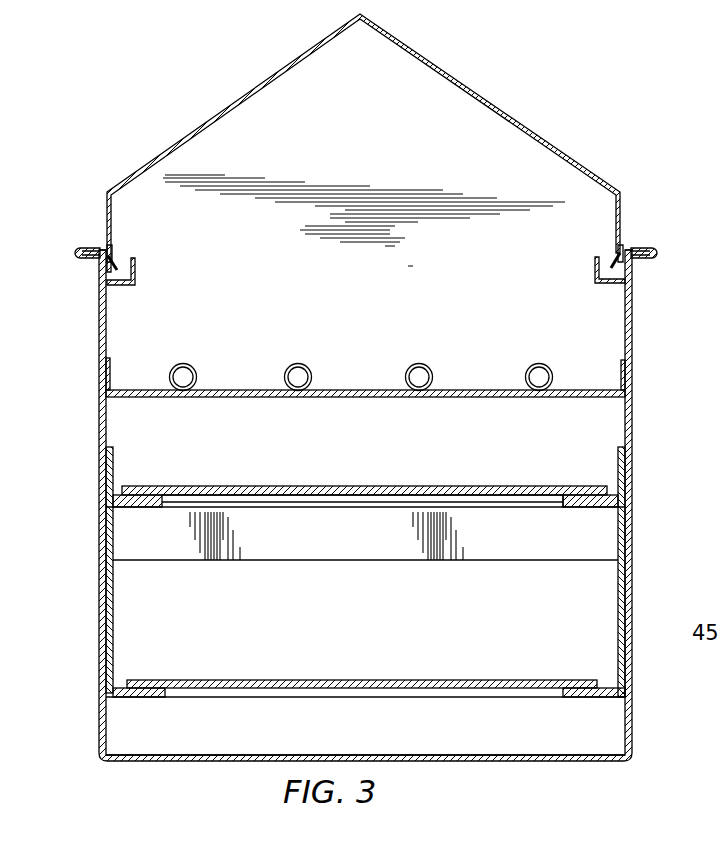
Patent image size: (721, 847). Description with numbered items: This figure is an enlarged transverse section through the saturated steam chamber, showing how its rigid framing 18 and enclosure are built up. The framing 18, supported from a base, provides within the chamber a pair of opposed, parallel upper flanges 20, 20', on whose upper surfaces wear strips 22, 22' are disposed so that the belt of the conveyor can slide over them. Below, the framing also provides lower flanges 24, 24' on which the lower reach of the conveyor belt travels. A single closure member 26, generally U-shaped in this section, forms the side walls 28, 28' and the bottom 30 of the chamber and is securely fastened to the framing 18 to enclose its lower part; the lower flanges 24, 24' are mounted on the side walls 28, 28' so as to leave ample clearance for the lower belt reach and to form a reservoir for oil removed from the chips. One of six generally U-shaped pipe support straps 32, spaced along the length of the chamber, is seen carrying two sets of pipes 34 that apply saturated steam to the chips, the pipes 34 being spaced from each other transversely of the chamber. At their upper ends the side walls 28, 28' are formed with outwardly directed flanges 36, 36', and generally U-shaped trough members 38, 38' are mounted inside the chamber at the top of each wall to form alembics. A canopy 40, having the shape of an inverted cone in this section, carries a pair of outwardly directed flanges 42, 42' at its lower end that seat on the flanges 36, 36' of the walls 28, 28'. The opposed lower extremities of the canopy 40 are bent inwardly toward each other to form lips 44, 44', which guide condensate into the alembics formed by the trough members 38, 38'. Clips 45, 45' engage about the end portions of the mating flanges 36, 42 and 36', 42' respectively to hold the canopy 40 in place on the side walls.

The rigid framing 18 is at (617, 650).
The upper flange 20 is at (365, 521).
The upper flange 20' is at (544, 521).
The wear strip 22 is at (364, 474).
The wear strip 22' is at (568, 480).
The lower flange 24 is at (365, 711).
The lower flange 24' is at (594, 714).
The closure member 26 is at (643, 337).
The side wall 28 is at (128, 552).
The side wall 28' is at (655, 547).
The bottom 30 is at (463, 762).
The pipe support strap 32 is at (392, 390).
The pipes 34 is at (287, 366).
The outwardly directed flange 36 is at (72, 279).
The outwardly directed flange 36' is at (659, 272).
The trough member 38 is at (148, 264).
The trough member 38' is at (582, 270).
The canopy 40 is at (440, 72).
The outwardly directed flange 42 is at (69, 231).
The outwardly directed flange 42' is at (655, 227).
The lip 44 is at (133, 239).
The lip 44' is at (592, 239).
The clip 45 is at (57, 250).
The clip 45' is at (676, 243).